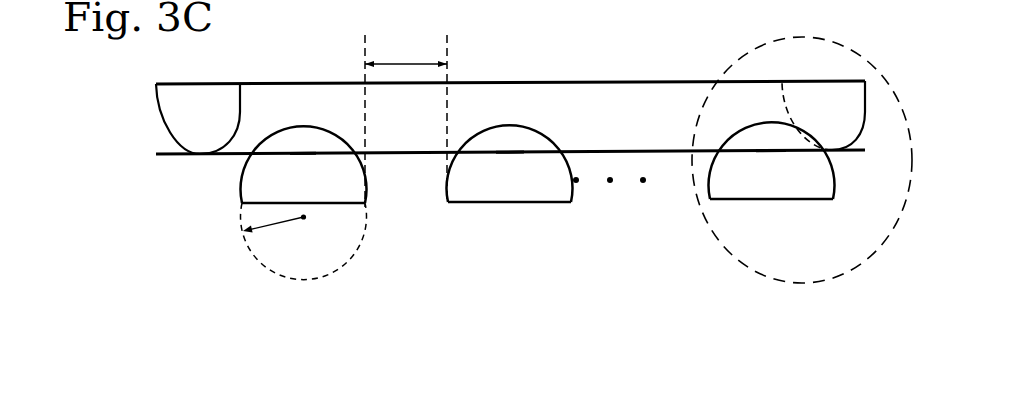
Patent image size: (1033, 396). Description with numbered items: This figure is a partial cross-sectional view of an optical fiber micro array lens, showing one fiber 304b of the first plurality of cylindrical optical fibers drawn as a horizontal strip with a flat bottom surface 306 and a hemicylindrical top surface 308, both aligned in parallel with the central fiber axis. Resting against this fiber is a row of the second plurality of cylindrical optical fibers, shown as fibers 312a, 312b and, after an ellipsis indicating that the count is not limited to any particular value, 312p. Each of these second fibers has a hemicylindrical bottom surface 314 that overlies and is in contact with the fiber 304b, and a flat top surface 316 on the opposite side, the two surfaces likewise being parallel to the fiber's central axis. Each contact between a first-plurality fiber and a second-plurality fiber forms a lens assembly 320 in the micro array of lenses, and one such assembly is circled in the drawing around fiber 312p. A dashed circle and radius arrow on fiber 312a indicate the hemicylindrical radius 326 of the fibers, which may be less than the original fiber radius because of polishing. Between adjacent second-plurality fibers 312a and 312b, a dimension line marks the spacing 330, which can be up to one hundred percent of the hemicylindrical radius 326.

The cylindrical optical fiber of the first plurality 304b is at (603, 128).
The flat bottom surface 306 is at (642, 80).
The hemicylindrical top surface 308 is at (672, 154).
The hemicylindrical bottom surface 314 is at (302, 150).
The cylindrical optical fiber of the second plurality 312a is at (273, 192).
The cylindrical optical fiber of the second plurality 312b is at (479, 192).
The cylindrical optical fiber of the second plurality 312p is at (742, 188).
The flat top surface 316 is at (338, 209).
The hemicylindrical radius 326 is at (273, 228).
The spacing 330 is at (412, 63).
The lens assembly 320 is at (723, 246).